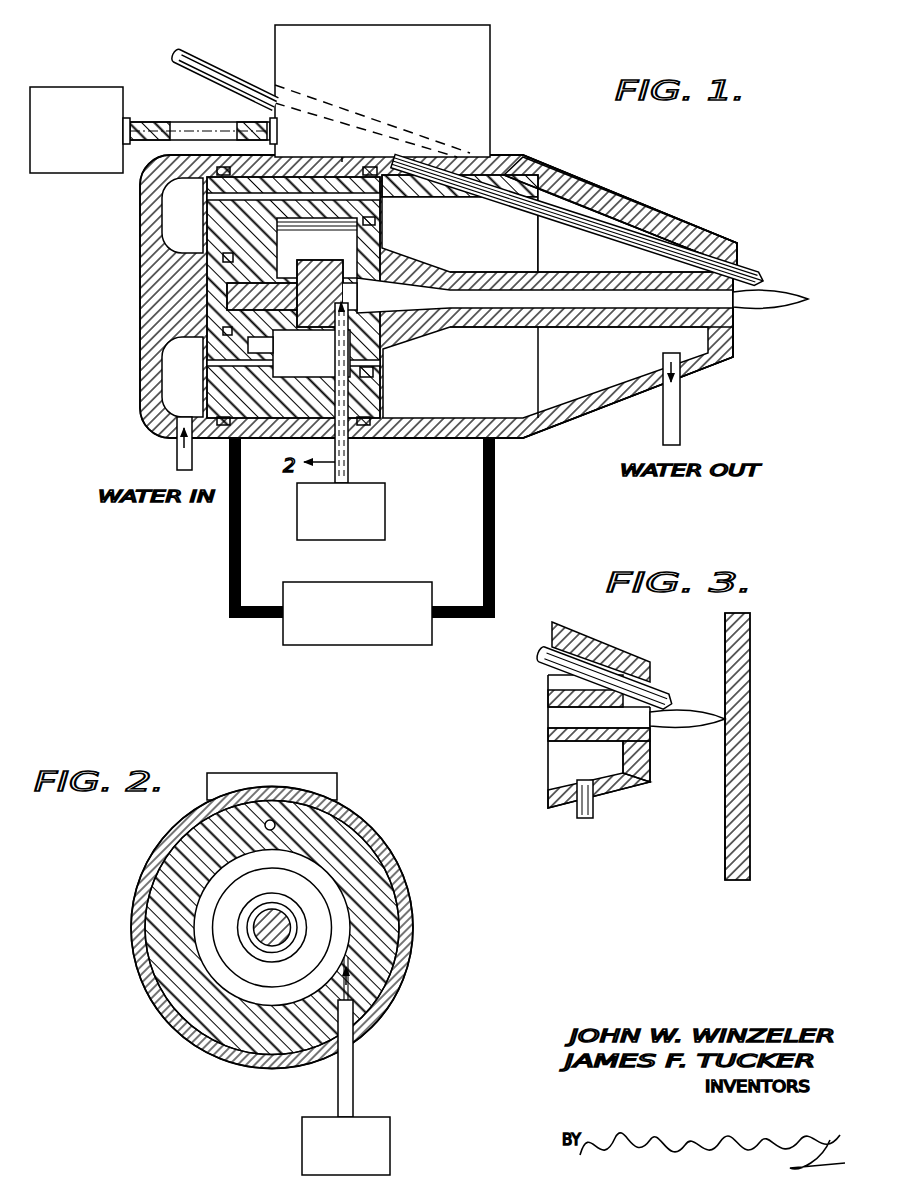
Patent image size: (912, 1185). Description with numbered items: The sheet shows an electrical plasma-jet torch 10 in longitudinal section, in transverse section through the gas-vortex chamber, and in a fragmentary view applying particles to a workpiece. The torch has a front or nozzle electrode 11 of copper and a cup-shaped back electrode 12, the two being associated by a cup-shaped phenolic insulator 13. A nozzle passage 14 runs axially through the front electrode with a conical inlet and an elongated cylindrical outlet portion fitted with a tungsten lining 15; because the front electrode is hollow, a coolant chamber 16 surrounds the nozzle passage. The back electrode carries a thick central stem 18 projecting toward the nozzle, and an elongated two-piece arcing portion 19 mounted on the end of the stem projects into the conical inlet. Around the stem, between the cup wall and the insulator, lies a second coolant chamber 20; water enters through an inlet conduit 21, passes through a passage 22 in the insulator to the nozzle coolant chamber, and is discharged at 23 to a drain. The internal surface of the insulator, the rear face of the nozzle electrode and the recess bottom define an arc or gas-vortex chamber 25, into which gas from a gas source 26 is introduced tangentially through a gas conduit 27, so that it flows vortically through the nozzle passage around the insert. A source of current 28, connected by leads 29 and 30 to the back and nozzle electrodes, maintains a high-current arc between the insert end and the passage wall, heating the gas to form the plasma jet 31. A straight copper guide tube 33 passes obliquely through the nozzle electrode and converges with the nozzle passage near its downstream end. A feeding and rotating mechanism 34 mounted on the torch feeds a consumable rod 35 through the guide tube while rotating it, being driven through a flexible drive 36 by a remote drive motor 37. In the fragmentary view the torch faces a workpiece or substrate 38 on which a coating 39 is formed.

In FIG. 1, the electrical plasma-jet torch 10 is at (574, 172).
In FIG. 3, the electrical plasma-jet torch 10 is at (586, 633).
In FIG. 1, the front or nozzle electrode 11 is at (583, 430).
In FIG. 2, the front or nozzle electrode 11 is at (402, 900).
In FIG. 3, the front or nozzle electrode 11 is at (621, 779).
In FIG. 1, the back electrode 12 is at (140, 410).
In FIG. 1, the insulator 13 is at (283, 447).
In FIG. 2, the insulator 13 is at (347, 848).
In FIG. 1, the nozzle passage 14 is at (645, 298).
In FIG. 3, the nozzle passage 14 is at (602, 720).
In FIG. 1, the lining 15 is at (583, 318).
In FIG. 3, the lining 15 is at (560, 708).
In FIG. 1, the coolant chamber 16 is at (545, 372).
In FIG. 3, the coolant chamber 16 is at (555, 771).
In FIG. 1, the central stem 18 is at (162, 276).
In FIG. 1, the arcing portion 19 is at (322, 283).
In FIG. 2, the arcing portion 19 is at (282, 930).
In FIG. 1, the coolant chamber 20 is at (182, 377).
In FIG. 1, the inlet conduit 21 is at (177, 462).
In FIG. 1, the passage 22 is at (392, 194).
In FIG. 2, the passage 22 is at (269, 820).
In FIG. 1, the discharge 23 is at (682, 413).
In FIG. 3, the discharge 23 is at (593, 816).
In FIG. 1, the arc or gas-vortex chamber 25 is at (299, 353).
In FIG. 2, the arc or gas-vortex chamber 25 is at (192, 935).
In FIG. 1, the gas source 26 is at (387, 512).
In FIG. 2, the gas source 26 is at (392, 1146).
In FIG. 1, the gas conduit 27 is at (350, 462).
In FIG. 2, the gas conduit 27 is at (354, 1075).
In FIG. 1, the source of current 28 is at (365, 650).
In FIG. 1, the lead 29 is at (229, 578).
In FIG. 1, the lead 30 is at (495, 521).
In FIG. 1, the plasma jet 31 is at (804, 312).
In FIG. 3, the plasma jet 31 is at (701, 726).
In FIG. 1, the guide tube 33 is at (606, 252).
In FIG. 1, the feeding and rotating mechanism 34 is at (490, 47).
In FIG. 1, the consumable rod 35 is at (684, 258).
In FIG. 3, the consumable rod 35 is at (652, 692).
In FIG. 1, the flexible drive 36 is at (150, 120).
In FIG. 1, the drive motor 37 is at (62, 175).
In FIG. 3, the workpiece or substrate 38 is at (746, 783).
In FIG. 3, the coating 39 is at (724, 636).